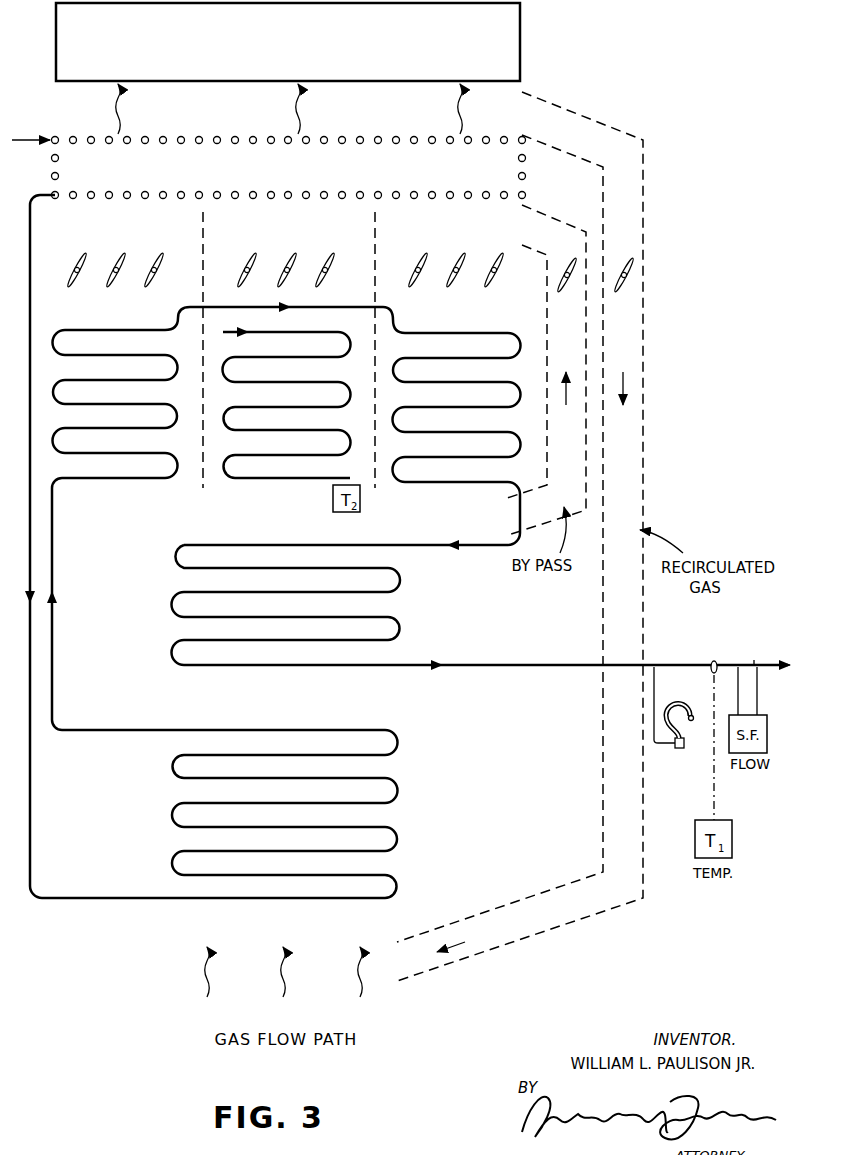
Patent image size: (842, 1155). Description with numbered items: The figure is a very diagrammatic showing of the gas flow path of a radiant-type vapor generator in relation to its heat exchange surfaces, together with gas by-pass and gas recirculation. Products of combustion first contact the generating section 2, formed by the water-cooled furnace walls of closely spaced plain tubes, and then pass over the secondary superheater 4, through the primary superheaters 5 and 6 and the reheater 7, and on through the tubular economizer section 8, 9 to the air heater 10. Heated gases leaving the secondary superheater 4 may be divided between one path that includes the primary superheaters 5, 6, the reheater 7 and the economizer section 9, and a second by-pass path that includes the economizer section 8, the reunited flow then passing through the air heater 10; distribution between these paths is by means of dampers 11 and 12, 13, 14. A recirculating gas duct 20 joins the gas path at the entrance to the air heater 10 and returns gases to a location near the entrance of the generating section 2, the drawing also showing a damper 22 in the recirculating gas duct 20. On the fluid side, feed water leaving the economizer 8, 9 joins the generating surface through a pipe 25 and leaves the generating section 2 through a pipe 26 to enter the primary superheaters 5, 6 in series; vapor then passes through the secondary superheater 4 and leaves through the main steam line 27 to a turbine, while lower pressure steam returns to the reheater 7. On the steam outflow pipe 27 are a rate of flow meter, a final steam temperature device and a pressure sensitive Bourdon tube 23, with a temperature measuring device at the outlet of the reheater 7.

The generating section 2 is at (285, 814).
The secondary superheater 4 is at (285, 605).
The primary superheater 5 is at (121, 392).
The primary superheater 6 is at (452, 394).
The reheater 7 is at (286, 405).
The economizer section 8 is at (289, 157).
The economizer section 9 is at (289, 178).
The air heater 10 is at (288, 42).
The damper 11 is at (577, 260).
The damper 12 is at (115, 267).
The damper 13 is at (286, 266).
The damper 14 is at (456, 266).
The recirculating gas duct 20 is at (642, 437).
The recirculated gas damper 22 is at (632, 264).
The pressure sensitive Bourdon tube 23 is at (670, 704).
The pipe 25 is at (78, 897).
The pipe 26 is at (112, 728).
The main steam line 27 is at (500, 663).